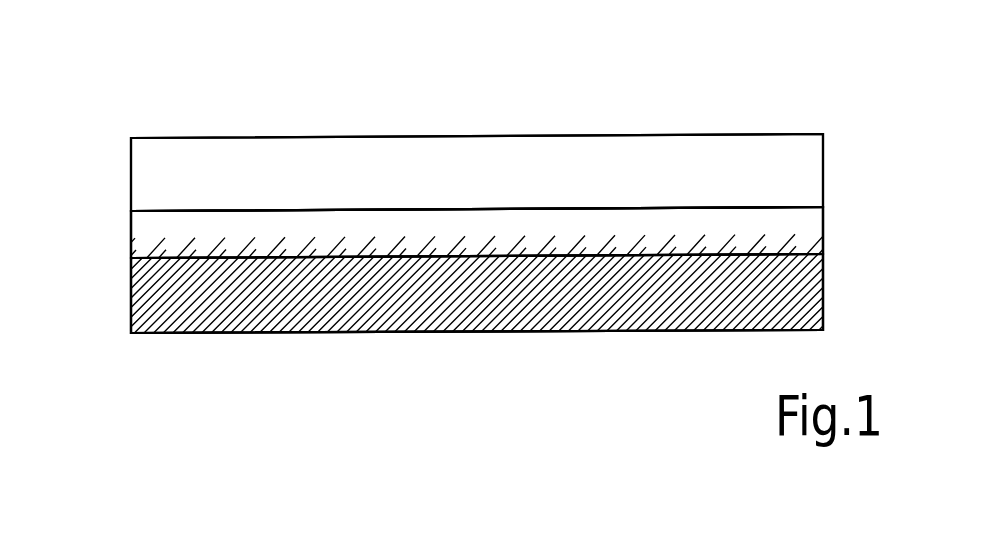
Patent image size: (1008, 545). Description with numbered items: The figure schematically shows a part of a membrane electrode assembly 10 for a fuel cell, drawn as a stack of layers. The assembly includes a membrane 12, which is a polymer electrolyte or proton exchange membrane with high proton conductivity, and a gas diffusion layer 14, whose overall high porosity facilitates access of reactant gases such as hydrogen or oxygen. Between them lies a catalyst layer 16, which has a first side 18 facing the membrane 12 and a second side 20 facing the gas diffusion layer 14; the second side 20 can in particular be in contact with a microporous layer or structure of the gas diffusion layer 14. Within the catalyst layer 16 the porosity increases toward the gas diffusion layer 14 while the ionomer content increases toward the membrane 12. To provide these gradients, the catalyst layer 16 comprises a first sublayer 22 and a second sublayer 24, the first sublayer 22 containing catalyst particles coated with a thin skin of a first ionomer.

The membrane electrode assembly 10 is at (120, 103).
The membrane 12 is at (358, 331).
The gas diffusion layer 14 is at (343, 150).
The catalyst layer 16 is at (116, 232).
The first side 18 is at (209, 259).
The second side 20 is at (624, 207).
The first sublayer 22 is at (498, 220).
The second sublayer 24 is at (333, 253).